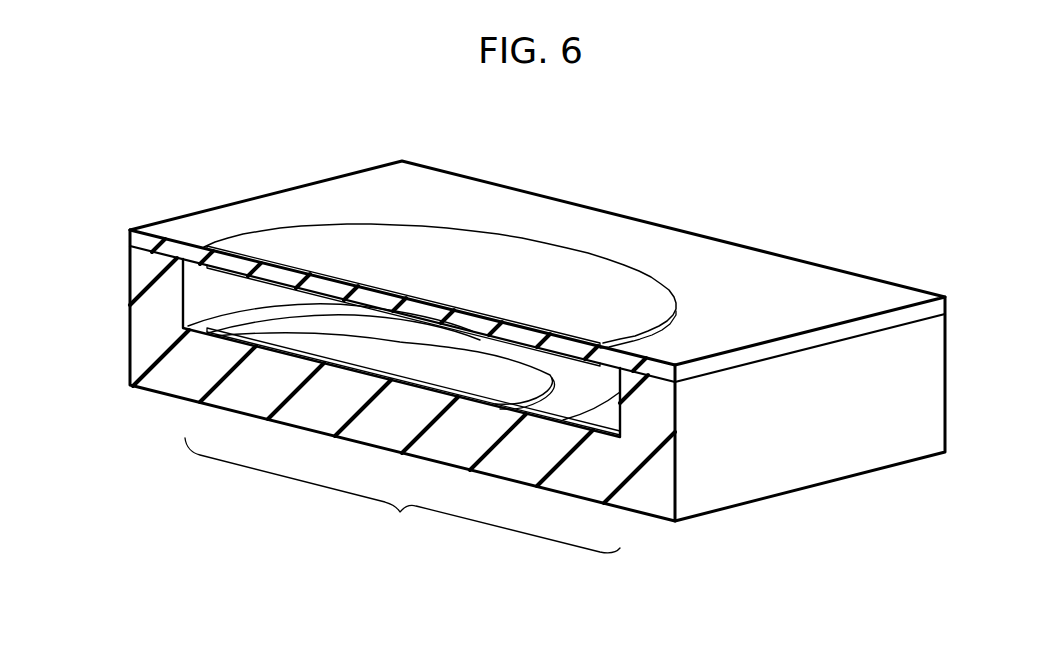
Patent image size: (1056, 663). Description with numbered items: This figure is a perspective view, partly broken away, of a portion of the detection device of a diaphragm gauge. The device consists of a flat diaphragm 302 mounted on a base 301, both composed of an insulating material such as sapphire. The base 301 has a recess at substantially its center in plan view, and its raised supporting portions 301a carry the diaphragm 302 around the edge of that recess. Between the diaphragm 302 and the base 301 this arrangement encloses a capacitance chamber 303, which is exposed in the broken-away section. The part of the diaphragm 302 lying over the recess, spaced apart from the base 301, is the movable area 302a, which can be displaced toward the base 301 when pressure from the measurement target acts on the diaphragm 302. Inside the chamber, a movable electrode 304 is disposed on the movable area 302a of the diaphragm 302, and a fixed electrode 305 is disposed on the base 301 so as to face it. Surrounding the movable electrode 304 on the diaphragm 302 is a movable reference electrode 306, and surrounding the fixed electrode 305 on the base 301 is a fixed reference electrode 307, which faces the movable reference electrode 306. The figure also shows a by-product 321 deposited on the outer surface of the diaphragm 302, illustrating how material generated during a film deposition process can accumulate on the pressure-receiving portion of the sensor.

The base 301 is at (948, 384).
The supporting portions 301a is at (140, 279).
The diaphragm 302 is at (948, 306).
The movable area 302a is at (402, 495).
The capacitance chamber 303 is at (202, 297).
The movable electrode 304 is at (343, 371).
The fixed electrode 305 is at (403, 378).
The movable reference electrode 306 is at (190, 333).
The fixed reference electrode 307 is at (228, 334).
The by-product 321 is at (464, 263).